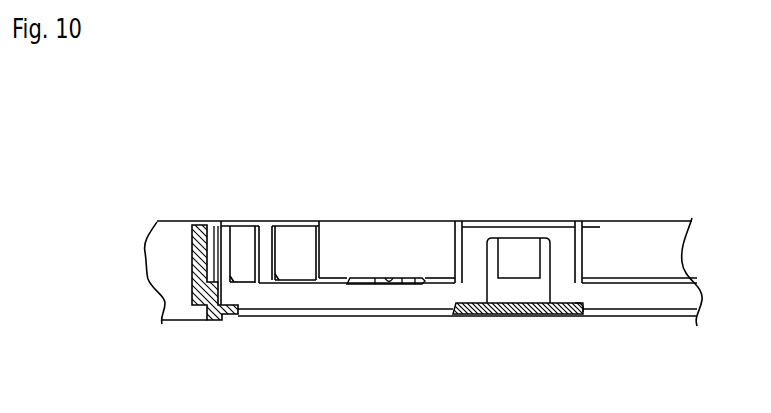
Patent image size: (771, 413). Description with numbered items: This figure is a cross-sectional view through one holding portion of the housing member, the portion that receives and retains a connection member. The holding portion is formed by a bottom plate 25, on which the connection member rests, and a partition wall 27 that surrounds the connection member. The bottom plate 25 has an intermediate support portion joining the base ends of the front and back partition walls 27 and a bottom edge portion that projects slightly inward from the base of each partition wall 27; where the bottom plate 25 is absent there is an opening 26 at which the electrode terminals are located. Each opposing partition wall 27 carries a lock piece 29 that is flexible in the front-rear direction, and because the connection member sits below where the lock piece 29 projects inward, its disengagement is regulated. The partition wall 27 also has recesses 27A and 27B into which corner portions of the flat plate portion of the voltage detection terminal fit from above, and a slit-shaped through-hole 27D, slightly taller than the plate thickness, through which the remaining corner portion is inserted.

The bottom plate 25 is at (566, 303).
The opening 26 is at (452, 306).
The partition wall 27 is at (190, 247).
The recess 27A is at (412, 282).
The recess 27B is at (216, 282).
The through-hole 27D is at (396, 283).
The lock piece 29 is at (523, 257).